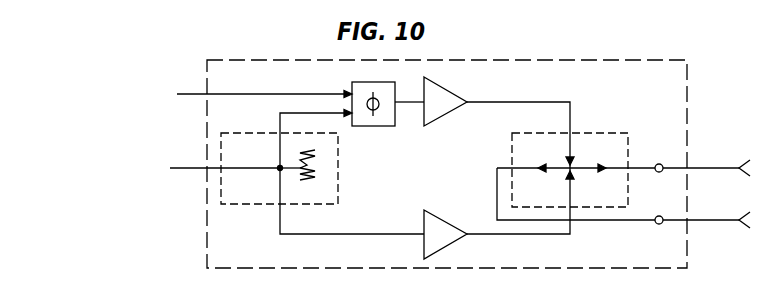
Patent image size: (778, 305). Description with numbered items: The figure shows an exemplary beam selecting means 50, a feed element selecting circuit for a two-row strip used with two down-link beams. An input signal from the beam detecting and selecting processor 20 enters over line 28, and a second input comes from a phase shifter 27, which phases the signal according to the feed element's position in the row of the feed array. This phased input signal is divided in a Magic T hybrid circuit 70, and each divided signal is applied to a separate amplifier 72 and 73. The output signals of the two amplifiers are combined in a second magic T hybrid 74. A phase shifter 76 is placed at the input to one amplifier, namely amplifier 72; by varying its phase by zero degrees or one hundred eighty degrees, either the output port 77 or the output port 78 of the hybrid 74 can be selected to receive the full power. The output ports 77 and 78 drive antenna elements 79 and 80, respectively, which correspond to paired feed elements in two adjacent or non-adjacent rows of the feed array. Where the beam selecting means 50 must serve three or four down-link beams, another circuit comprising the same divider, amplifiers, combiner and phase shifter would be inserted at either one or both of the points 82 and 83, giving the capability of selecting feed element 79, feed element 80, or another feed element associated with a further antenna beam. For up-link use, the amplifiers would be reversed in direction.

The beam detecting and selecting processor 20 is at (170, 132).
The phase shifter 27 is at (111, 212).
The line from beam detecting and selecting processor 28 is at (240, 94).
The beam selecting means 50 is at (676, 87).
The Magic T hybrid circuit 70 is at (338, 163).
The amplifier 72 is at (452, 94).
The amplifier 73 is at (447, 222).
The magic T hybrid 74 is at (606, 133).
The phase shifter 76 is at (357, 82).
The output port 77 is at (586, 166).
The output port 78 is at (497, 166).
The antenna element 79 is at (747, 161).
The antenna element 80 is at (747, 227).
The point 82 is at (659, 164).
The point 83 is at (659, 224).